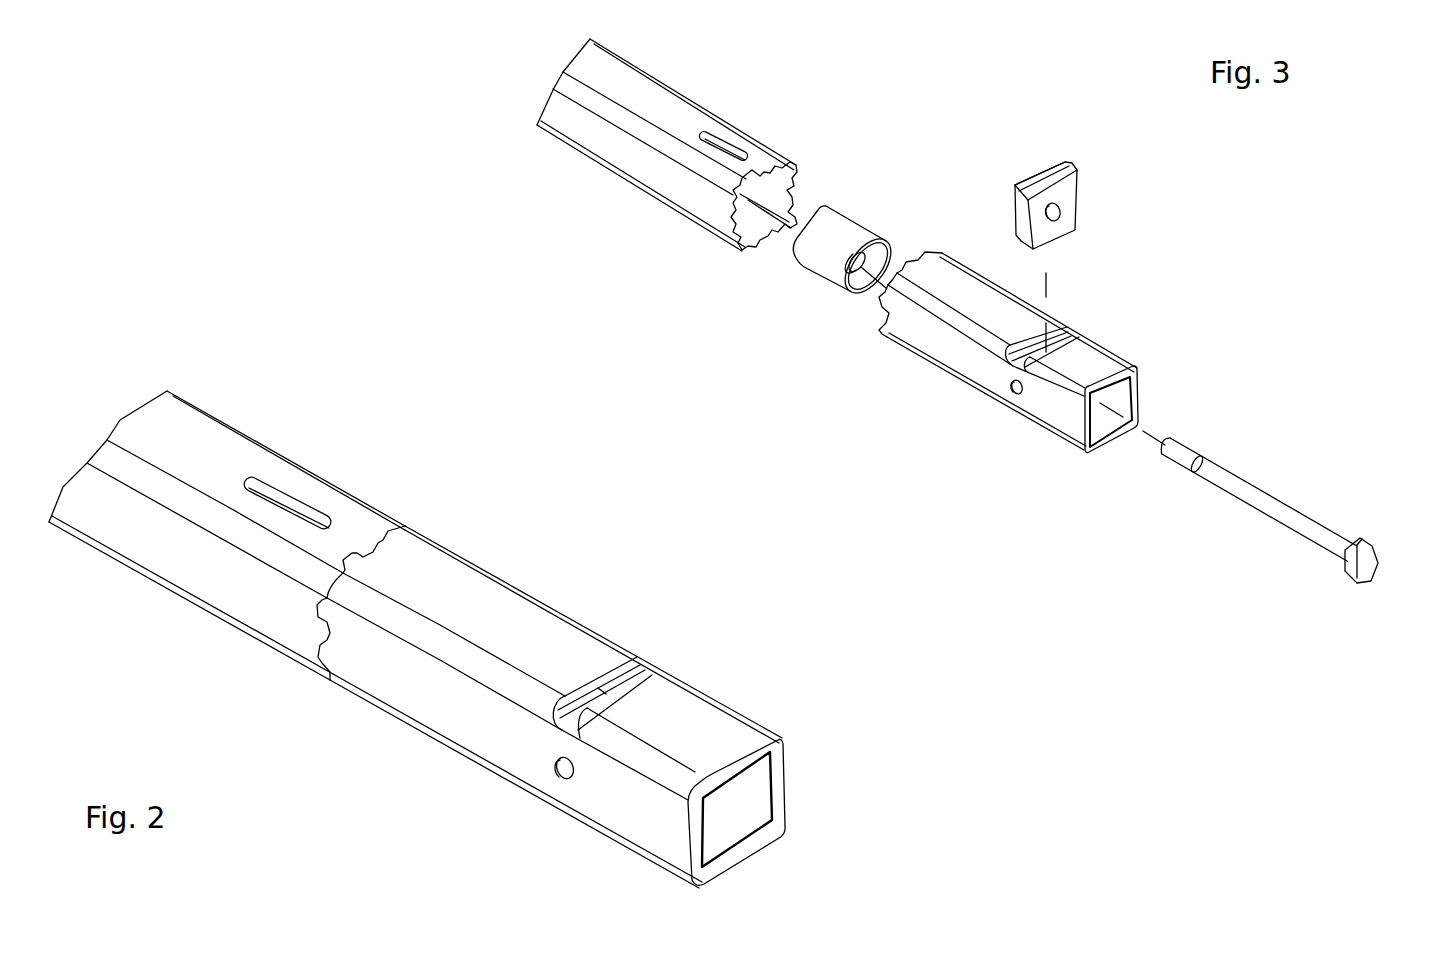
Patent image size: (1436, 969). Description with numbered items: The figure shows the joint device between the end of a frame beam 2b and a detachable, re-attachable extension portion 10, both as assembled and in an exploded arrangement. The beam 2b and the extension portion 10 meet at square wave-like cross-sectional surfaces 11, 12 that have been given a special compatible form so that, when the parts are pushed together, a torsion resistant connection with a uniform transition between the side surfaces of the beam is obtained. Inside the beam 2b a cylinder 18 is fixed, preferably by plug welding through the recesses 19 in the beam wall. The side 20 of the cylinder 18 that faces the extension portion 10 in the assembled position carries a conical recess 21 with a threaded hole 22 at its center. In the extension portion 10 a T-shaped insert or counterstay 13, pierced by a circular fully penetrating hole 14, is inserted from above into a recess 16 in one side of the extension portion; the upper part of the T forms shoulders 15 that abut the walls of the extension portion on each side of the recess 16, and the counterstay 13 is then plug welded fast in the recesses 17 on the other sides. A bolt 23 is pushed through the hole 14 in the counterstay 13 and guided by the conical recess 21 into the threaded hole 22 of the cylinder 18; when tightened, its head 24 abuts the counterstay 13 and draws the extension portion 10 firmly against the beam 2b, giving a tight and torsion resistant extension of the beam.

In FIG. 2, the beam 2b is at (210, 440).
In FIG. 3, the beam 2b is at (653, 82).
In FIG. 2, the extension portion 10 is at (508, 612).
In FIG. 3, the extension portion 10 is at (1057, 417).
In FIG. 2, the cross-sectional surface 11 is at (388, 527).
In FIG. 3, the cross-sectional surface 11 is at (740, 248).
In FIG. 2, the cross-sectional surface 12 is at (323, 639).
In FIG. 3, the cross-sectional surface 12 is at (877, 327).
In FIG. 2, the counterstay 13 is at (603, 693).
In FIG. 3, the counterstay 13 is at (1074, 241).
In FIG. 3, the hole 14 is at (1062, 210).
In FIG. 3, the shoulders 15 is at (1080, 173).
In FIG. 2, the recess 16 is at (647, 673).
In FIG. 3, the recess 16 is at (1068, 333).
In FIG. 2, the recesses 17 is at (552, 771).
In FIG. 3, the recesses 17 is at (1008, 390).
In FIG. 3, the cylinder 18 is at (857, 264).
In FIG. 2, the recesses 19 is at (293, 502).
In FIG. 3, the recesses 19 is at (716, 140).
In FIG. 3, the side 20 is at (888, 250).
In FIG. 3, the conical recess 21 is at (860, 287).
In FIG. 3, the threaded hole 22 is at (857, 264).
In FIG. 3, the bolt 23 is at (1273, 502).
In FIG. 3, the head 24 is at (1367, 563).